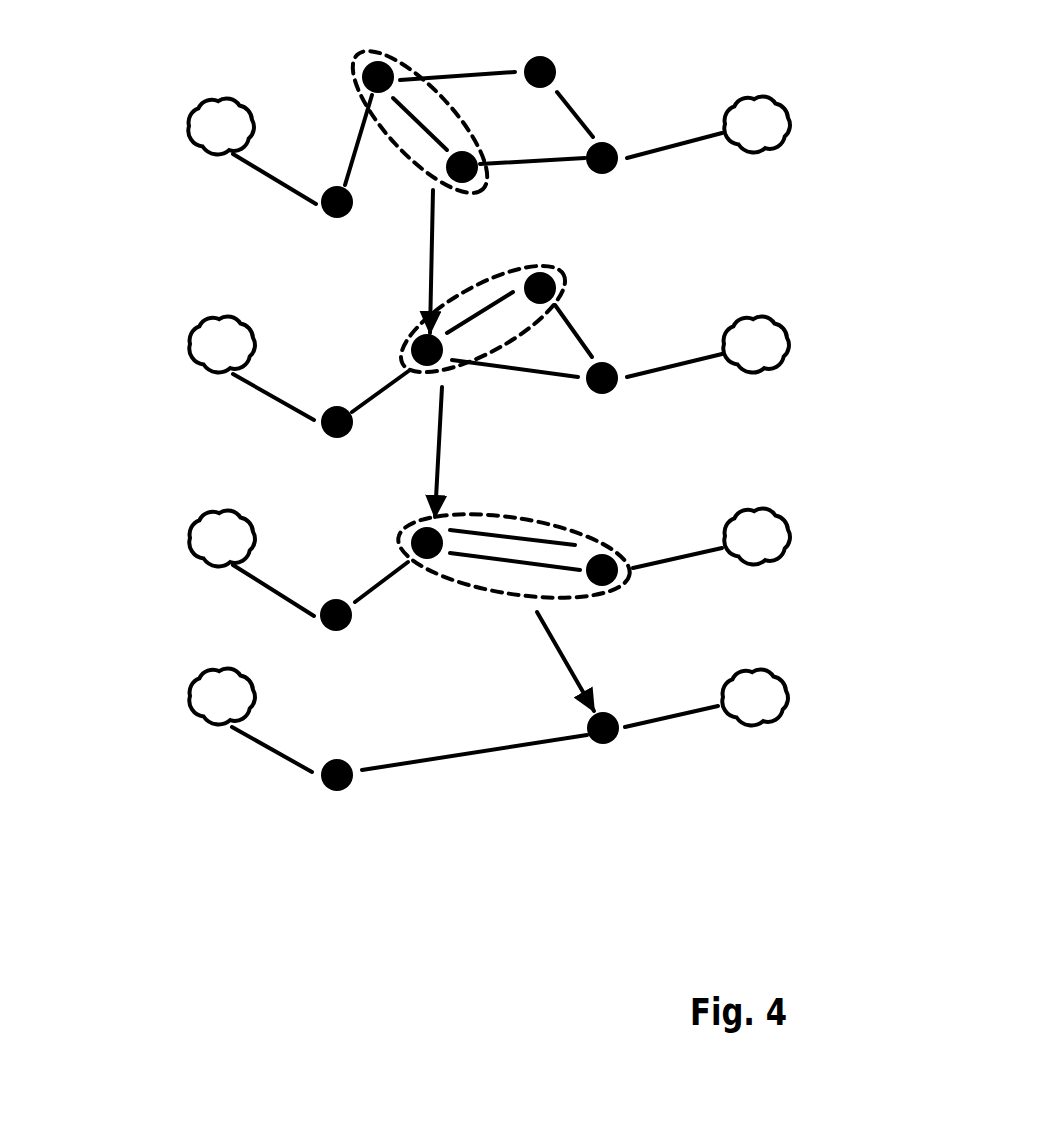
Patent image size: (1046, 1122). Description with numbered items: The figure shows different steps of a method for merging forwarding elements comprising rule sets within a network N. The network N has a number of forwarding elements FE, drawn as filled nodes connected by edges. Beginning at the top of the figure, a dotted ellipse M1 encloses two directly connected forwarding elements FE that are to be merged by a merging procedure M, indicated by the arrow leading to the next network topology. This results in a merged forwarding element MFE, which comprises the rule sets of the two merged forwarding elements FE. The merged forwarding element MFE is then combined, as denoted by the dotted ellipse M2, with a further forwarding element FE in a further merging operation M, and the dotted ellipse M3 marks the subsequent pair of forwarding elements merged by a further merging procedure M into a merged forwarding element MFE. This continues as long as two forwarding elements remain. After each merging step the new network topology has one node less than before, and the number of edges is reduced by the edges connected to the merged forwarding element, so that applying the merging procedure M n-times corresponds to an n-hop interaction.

The network N is at (790, 103).
The dotted ellipse M1 is at (418, 177).
The dotted ellipse M2 is at (405, 341).
The third mesh M3 is at (477, 590).
The merging procedure M is at (435, 250).
The forwarding element FE is at (613, 173).
The merged forwarding element MFE is at (422, 368).